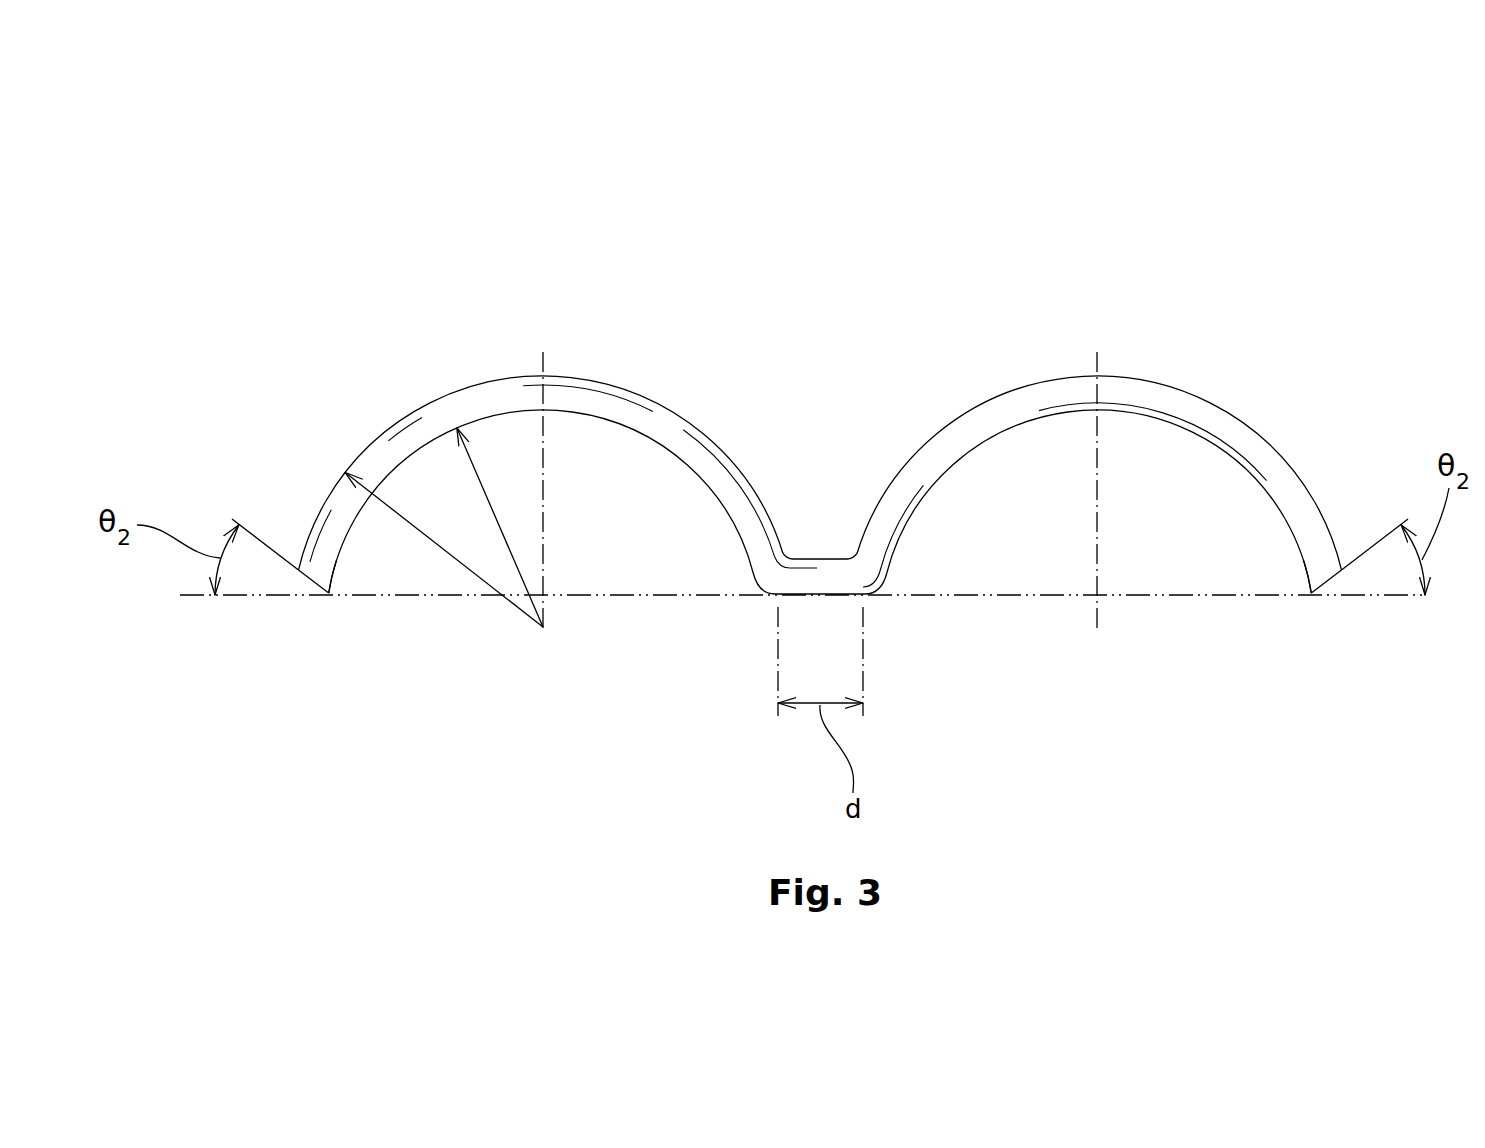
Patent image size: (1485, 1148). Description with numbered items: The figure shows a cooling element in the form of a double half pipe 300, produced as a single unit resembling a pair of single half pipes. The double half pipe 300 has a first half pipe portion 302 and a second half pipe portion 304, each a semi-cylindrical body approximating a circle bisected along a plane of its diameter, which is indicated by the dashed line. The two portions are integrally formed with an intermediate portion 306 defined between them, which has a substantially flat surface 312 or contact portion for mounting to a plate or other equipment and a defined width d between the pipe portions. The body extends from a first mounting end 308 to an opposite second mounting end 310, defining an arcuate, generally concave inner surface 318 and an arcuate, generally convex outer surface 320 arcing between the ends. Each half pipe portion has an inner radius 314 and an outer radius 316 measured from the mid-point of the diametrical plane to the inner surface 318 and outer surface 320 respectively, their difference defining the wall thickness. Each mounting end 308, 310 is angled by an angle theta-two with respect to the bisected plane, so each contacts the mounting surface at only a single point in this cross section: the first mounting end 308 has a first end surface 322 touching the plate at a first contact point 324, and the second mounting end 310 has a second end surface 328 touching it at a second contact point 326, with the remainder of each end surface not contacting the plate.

The double half pipe 300 is at (1161, 214).
The first half pipe portion 302 is at (1048, 380).
The second half pipe portion 304 is at (396, 421).
The intermediate portion 306 is at (829, 557).
The first mounting end 308 is at (330, 594).
The second mounting end 310 is at (1310, 594).
The flat surface 312 is at (788, 598).
The inner radius 314 is at (480, 474).
The outer radius 316 is at (441, 550).
The inner surface 318 is at (632, 434).
The outer surface 320 is at (641, 404).
The first end surface 322 is at (306, 580).
The first contact point 324 is at (334, 597).
The second contact point 326 is at (1306, 597).
The second end surface 328 is at (1334, 580).